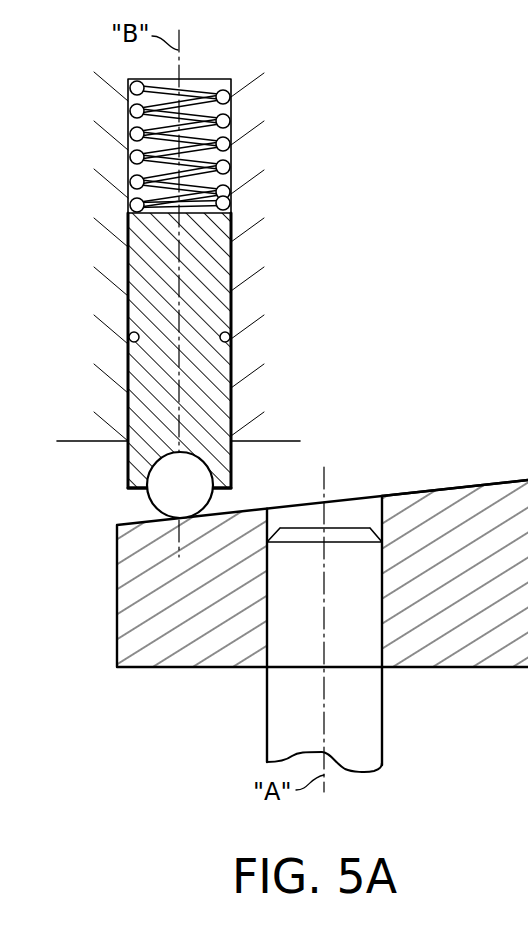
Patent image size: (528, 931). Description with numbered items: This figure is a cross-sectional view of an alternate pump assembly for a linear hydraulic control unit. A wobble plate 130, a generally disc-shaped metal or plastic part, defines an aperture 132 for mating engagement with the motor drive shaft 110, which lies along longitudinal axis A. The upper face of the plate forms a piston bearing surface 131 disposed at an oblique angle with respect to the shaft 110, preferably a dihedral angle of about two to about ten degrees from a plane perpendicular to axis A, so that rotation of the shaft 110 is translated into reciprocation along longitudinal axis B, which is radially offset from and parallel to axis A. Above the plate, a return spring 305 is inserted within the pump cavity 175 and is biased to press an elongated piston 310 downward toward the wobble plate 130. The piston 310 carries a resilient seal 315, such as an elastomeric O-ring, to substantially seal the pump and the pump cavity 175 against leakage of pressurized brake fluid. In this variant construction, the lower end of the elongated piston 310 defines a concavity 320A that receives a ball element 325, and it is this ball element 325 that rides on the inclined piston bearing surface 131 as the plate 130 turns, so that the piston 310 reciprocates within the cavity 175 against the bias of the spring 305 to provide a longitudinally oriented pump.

The motor drive shaft 110 is at (383, 708).
The wobble plate 130 is at (484, 668).
The piston bearing surface 131 is at (490, 486).
The aperture 132 is at (355, 514).
The pump cavity 175 is at (223, 109).
The return spring 305 is at (223, 168).
The elongated piston 310 is at (217, 258).
The resilient seal 315 is at (228, 337).
The concavity 320A is at (143, 488).
The ball element 325 is at (213, 478).